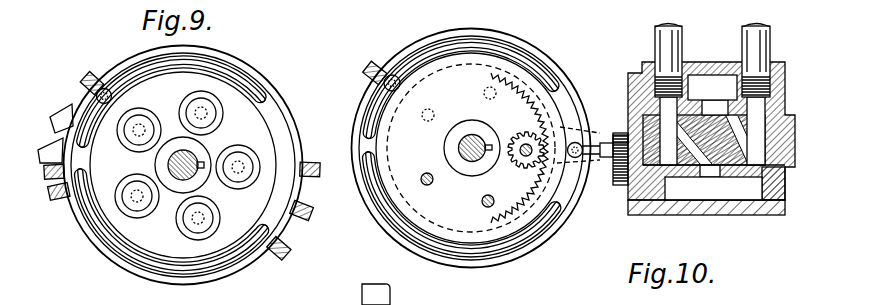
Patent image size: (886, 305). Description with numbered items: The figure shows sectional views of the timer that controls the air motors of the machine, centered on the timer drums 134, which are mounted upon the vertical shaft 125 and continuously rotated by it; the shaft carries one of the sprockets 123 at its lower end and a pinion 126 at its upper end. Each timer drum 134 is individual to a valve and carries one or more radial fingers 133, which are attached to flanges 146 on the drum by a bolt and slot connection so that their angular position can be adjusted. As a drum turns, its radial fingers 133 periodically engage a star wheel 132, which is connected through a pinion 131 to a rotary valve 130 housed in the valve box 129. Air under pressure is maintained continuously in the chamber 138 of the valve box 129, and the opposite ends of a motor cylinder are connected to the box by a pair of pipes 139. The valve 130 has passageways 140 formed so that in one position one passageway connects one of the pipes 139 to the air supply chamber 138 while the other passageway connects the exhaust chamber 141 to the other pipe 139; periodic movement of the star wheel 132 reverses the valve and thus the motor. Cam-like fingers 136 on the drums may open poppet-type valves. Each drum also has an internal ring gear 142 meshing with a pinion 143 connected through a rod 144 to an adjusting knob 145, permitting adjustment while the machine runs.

In FIG. 10, the sprockets 123 is at (590, 24).
In FIG. 9, the vertical shaft 125 is at (171, 140).
In FIG. 10, the vertical shaft 125 is at (458, 148).
In FIG. 10, the pinion 126 is at (580, 28).
In FIG. 10, the valve box 129 is at (786, 83).
In FIG. 10, the rotary valve 130 is at (784, 183).
In FIG. 10, the pinion 131 is at (617, 135).
In FIG. 10, the star wheel 132 is at (607, 188).
In FIG. 9, the radial finger 133 is at (89, 69).
In FIG. 10, the radial finger 133 is at (366, 63).
In FIG. 9, the timer drum 134 is at (254, 268).
In FIG. 10, the timer drum 134 is at (575, 51).
In FIG. 9, the cam-like finger 136 is at (70, 116).
In FIG. 10, the air supply chamber 138 is at (746, 200).
In FIG. 10, the pipes 139 is at (753, 36).
In FIG. 10, the passageways 140 is at (713, 188).
In FIG. 10, the exhaust chamber 141 is at (700, 88).
In FIG. 10, the internal ring gear 142 is at (523, 92).
In FIG. 10, the pinion 143 is at (528, 132).
In FIG. 10, the rod 144 is at (503, 190).
In FIG. 9, the adjusting knob 145 is at (219, 116).
In FIG. 9, the flange 146 is at (133, 266).
In FIG. 10, the flange 146 is at (530, 241).